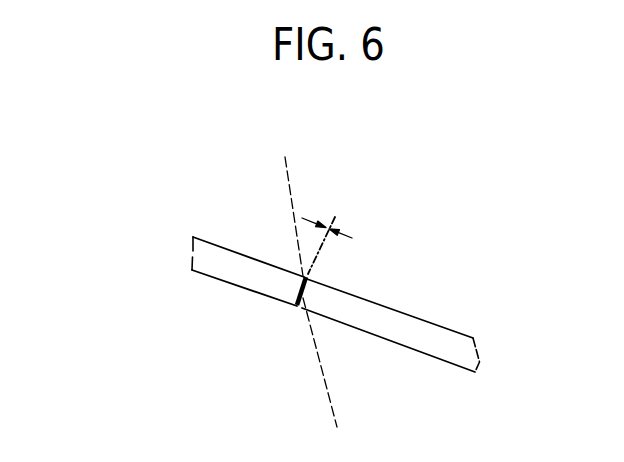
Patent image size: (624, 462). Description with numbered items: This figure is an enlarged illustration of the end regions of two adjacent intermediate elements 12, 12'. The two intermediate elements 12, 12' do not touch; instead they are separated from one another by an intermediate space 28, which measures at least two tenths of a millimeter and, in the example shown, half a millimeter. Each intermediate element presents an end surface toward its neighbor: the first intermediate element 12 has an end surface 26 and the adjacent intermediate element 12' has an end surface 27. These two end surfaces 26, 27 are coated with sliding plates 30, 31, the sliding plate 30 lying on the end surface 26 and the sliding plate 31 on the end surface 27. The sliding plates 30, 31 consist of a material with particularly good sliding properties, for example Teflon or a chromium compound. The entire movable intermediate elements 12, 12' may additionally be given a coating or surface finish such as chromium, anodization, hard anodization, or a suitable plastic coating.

The intermediate element 12 is at (220, 198).
The adjacent intermediate element 12' is at (430, 310).
The end surface 26 is at (269, 199).
The end surface 27 is at (308, 283).
The intermediate space 28 is at (335, 217).
The sliding plate 30 is at (298, 303).
The sliding plate 31 is at (382, 427).